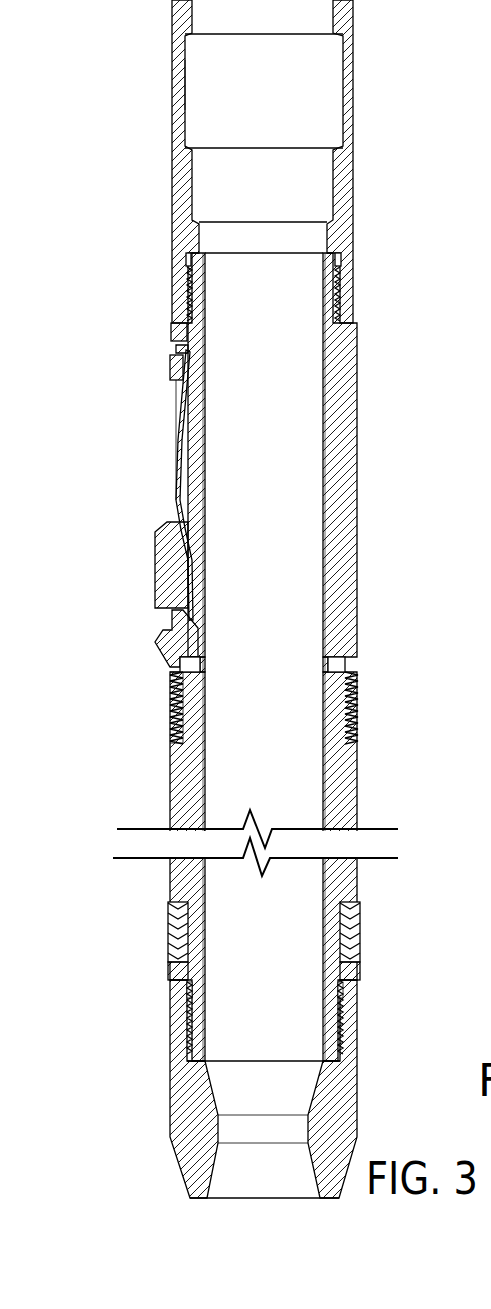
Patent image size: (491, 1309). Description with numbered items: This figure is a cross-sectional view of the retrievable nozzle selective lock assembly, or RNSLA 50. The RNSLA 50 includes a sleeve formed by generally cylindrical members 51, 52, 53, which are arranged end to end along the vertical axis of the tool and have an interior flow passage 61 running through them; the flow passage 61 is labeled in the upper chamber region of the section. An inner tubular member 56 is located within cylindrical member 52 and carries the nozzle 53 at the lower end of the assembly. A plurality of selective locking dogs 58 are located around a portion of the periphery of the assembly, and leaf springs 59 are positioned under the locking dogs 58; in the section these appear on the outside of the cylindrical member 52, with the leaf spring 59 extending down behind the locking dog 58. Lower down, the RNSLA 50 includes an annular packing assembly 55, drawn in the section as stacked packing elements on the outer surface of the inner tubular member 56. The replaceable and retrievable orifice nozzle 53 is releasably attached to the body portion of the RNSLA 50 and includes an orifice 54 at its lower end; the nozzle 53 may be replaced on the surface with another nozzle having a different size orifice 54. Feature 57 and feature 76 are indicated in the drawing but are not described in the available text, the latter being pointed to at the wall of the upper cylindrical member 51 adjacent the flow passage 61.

The retrievable nozzle selective lock assembly 50 is at (130, 1076).
The cylindrical member 51 is at (355, 135).
The cylindrical member 52 is at (357, 437).
The orifice nozzle 53 is at (180, 1165).
The orifice 54 is at (258, 1127).
The annular packing assembly 55 is at (170, 938).
The inner tubular member 56 is at (357, 765).
The threaded connection 57 is at (172, 708).
The selective locking dogs 58 is at (155, 578).
The leaf springs 59 is at (176, 470).
The interior flow passage 61 is at (298, 93).
The port 76 is at (190, 83).